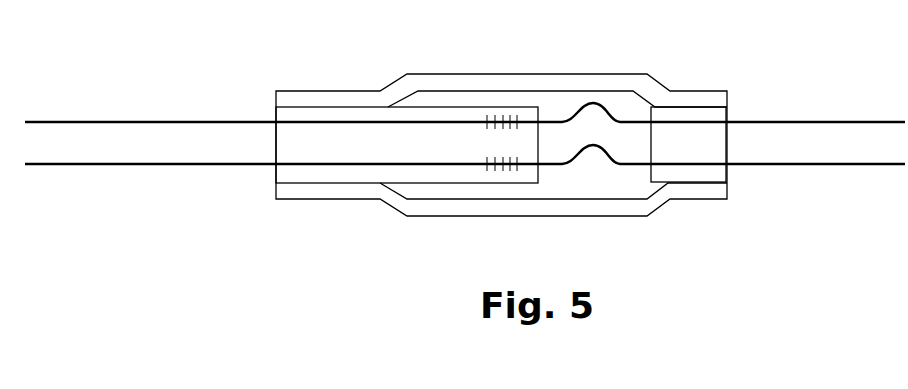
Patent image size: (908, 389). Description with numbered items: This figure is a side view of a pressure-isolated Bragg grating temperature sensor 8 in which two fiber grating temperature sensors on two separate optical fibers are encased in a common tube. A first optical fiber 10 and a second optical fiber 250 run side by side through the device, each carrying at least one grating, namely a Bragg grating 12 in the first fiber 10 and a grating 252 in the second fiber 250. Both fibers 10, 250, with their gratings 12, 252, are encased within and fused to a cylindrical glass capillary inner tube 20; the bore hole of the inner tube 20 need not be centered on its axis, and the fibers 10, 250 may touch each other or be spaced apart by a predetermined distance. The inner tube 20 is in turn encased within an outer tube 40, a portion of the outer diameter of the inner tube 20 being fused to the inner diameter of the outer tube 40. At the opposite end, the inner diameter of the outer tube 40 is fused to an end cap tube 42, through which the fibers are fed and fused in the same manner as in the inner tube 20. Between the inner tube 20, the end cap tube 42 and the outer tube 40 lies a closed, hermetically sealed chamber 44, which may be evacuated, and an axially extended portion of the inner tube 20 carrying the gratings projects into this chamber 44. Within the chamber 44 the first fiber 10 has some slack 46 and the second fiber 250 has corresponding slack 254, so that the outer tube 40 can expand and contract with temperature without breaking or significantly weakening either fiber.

The pressure-isolated Bragg grating temperature sensor 8 is at (266, 74).
The optical waveguide 10 is at (138, 122).
The second optical fiber 250 is at (202, 164).
The Bragg grating 12 is at (485, 117).
The grating 252 is at (485, 158).
The inner tube 20 is at (392, 156).
The outer tube 40 is at (512, 84).
The end cap tube 42 is at (690, 143).
The chamber 44 is at (641, 106).
The slack 46 is at (608, 108).
The slack 254 is at (607, 146).